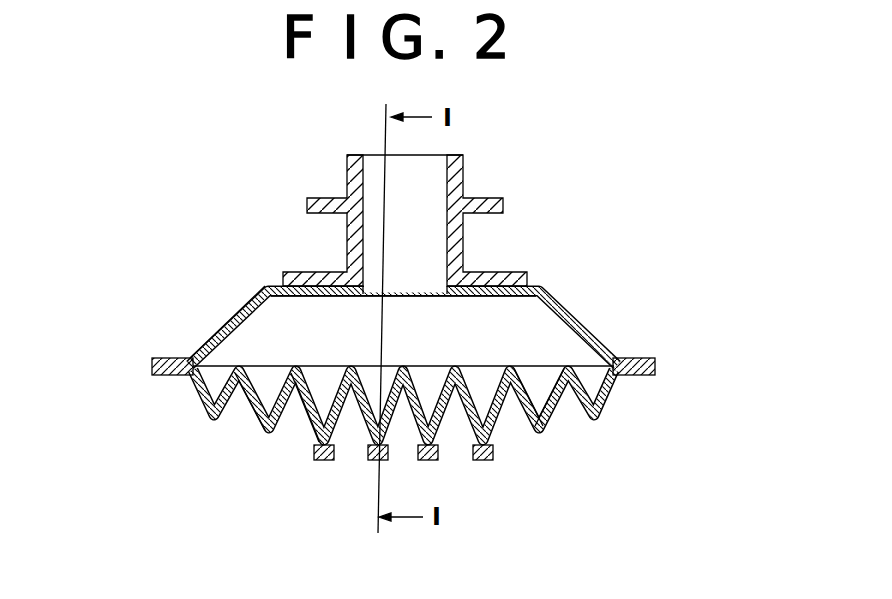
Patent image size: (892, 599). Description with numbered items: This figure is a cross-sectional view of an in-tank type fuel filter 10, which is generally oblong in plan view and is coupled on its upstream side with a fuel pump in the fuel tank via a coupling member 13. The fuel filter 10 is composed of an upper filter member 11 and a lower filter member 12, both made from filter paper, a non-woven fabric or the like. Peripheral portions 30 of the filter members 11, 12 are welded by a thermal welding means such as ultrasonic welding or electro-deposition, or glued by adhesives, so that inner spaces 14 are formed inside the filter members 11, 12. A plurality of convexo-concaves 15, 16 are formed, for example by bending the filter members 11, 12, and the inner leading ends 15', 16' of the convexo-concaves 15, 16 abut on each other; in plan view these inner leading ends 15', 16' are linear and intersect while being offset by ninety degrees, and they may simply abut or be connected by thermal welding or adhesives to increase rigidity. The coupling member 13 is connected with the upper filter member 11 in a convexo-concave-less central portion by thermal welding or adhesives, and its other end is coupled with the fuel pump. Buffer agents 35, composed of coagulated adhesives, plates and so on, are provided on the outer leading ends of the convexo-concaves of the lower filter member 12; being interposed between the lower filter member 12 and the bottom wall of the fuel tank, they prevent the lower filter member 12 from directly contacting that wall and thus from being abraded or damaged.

The fuel filter 10 is at (592, 313).
The upper filter member 11 is at (207, 335).
The lower filter member 12 is at (193, 388).
The coupling member 13 is at (452, 178).
The inner spaces 14 is at (540, 388).
The convexo-concaves 15 is at (207, 278).
The inner leading ends 15' is at (373, 260).
The convexo-concaves 16 is at (283, 458).
The inner leading ends 16' is at (211, 437).
The peripheral portions 30 is at (175, 360).
The buffer agents 35 is at (483, 460).